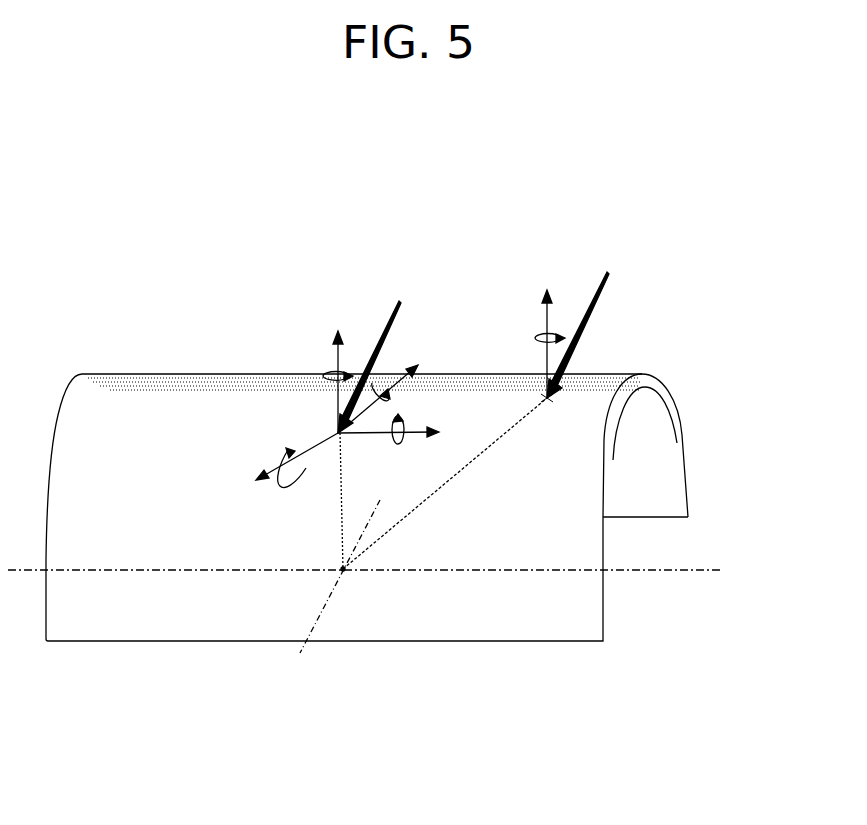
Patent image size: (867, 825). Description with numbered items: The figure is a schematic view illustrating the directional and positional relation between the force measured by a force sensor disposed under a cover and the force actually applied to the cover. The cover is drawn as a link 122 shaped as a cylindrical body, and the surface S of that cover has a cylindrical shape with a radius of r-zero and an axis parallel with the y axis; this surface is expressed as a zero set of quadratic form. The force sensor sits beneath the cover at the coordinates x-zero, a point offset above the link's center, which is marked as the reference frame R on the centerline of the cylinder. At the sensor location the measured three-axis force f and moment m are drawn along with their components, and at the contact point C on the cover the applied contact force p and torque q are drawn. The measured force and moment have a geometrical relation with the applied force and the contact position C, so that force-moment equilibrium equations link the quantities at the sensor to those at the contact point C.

The link 122 is at (93, 543).
The surface S is at (344, 404).
The link reference frame R is at (423, 525).
The contact position C is at (624, 344).